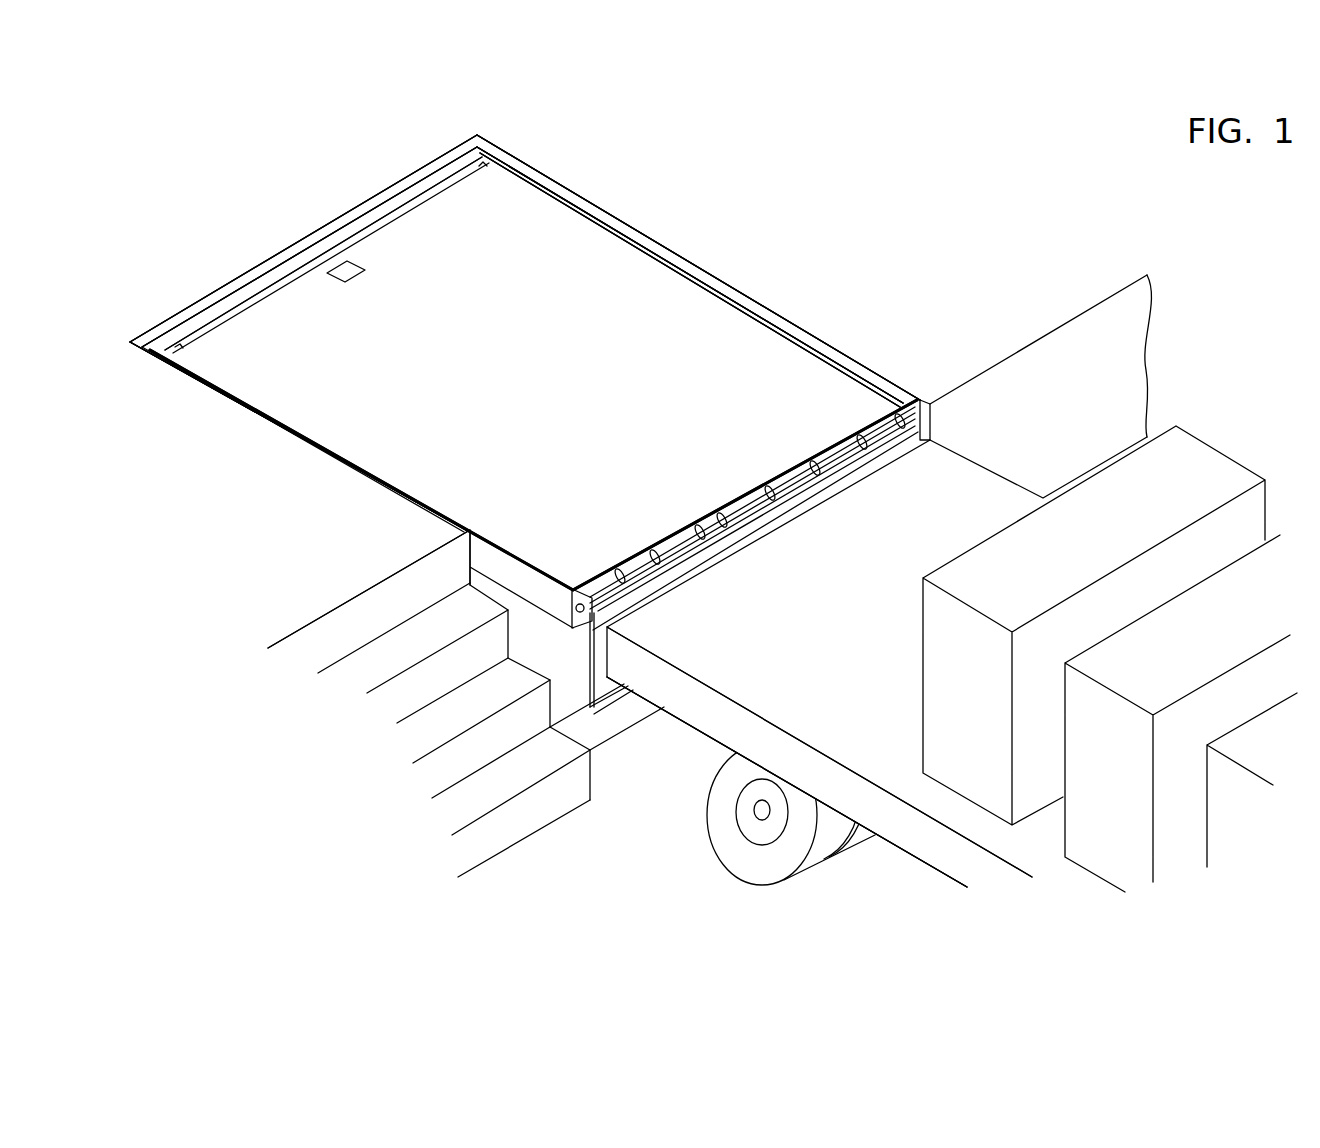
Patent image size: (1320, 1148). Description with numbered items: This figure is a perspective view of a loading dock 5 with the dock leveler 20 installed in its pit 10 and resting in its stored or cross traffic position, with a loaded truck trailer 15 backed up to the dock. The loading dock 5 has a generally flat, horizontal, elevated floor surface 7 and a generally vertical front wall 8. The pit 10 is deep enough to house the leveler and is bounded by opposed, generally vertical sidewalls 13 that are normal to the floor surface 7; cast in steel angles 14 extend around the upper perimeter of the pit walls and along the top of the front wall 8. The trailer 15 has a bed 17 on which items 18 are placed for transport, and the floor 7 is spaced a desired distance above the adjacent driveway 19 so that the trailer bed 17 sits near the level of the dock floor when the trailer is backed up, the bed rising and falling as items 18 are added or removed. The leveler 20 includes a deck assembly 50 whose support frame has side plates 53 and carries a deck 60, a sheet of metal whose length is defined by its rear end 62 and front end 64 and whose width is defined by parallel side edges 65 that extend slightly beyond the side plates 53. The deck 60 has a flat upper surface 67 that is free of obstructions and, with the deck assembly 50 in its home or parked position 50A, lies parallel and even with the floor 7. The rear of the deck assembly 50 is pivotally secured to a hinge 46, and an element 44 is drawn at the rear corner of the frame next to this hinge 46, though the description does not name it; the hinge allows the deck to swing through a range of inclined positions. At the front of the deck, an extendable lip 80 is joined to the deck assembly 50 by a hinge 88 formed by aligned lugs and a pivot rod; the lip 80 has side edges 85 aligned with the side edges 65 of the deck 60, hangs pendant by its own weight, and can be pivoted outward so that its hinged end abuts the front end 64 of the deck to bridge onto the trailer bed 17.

The loading dock 5 is at (742, 148).
The floor surface 7 is at (246, 546).
The front wall 8 is at (1070, 418).
The pit 10 is at (528, 650).
The sidewalls 13 is at (387, 483).
The cast in steel angles 14 is at (377, 198).
The truck trailer 15 is at (920, 838).
The bed 17 is at (803, 620).
The items 18 is at (1080, 533).
The driveway 19 is at (695, 906).
The dock leveler 20 is at (693, 275).
The rear frame member 44 is at (445, 172).
The hinge 46 is at (443, 190).
The deck assembly 50 is at (753, 300).
The home or parked position 50A is at (793, 330).
The side plates 53 is at (537, 590).
The deck 60 is at (547, 217).
The rear end 62 is at (395, 222).
The front end 64 is at (762, 483).
The side edges 65 is at (612, 232).
The upper surface 67 is at (500, 385).
The extendable lip 80 is at (642, 593).
The side edges 85 is at (588, 692).
The hinge 88 is at (685, 543).